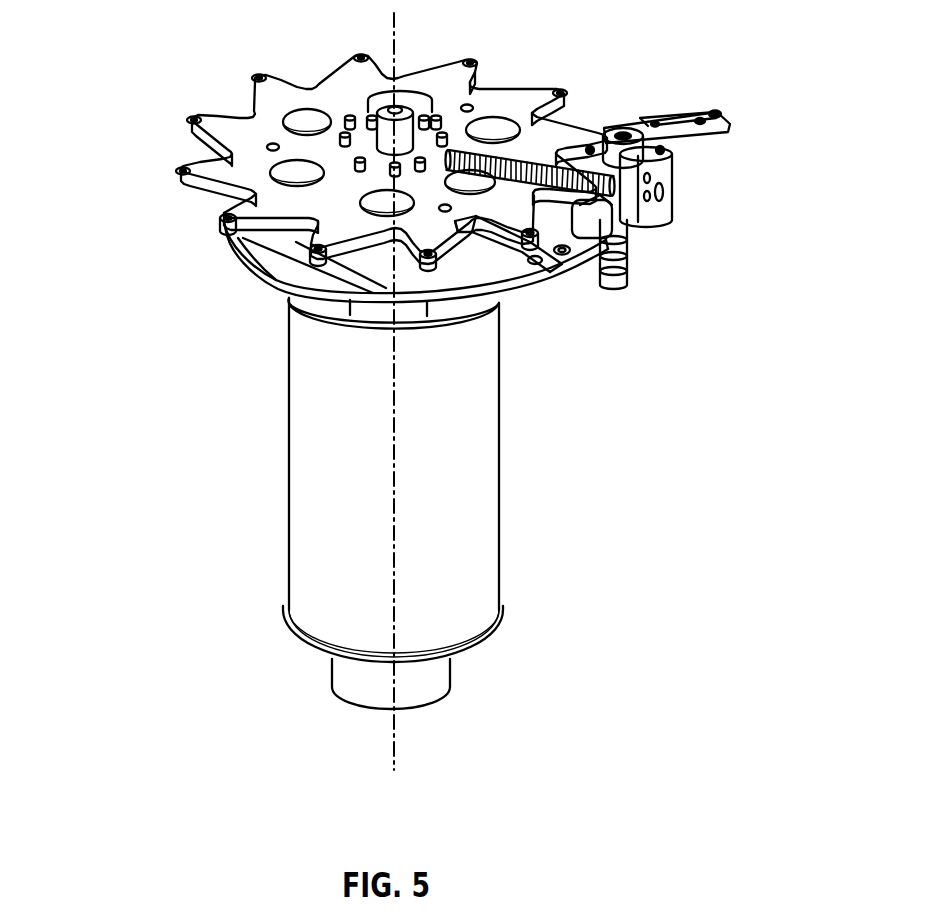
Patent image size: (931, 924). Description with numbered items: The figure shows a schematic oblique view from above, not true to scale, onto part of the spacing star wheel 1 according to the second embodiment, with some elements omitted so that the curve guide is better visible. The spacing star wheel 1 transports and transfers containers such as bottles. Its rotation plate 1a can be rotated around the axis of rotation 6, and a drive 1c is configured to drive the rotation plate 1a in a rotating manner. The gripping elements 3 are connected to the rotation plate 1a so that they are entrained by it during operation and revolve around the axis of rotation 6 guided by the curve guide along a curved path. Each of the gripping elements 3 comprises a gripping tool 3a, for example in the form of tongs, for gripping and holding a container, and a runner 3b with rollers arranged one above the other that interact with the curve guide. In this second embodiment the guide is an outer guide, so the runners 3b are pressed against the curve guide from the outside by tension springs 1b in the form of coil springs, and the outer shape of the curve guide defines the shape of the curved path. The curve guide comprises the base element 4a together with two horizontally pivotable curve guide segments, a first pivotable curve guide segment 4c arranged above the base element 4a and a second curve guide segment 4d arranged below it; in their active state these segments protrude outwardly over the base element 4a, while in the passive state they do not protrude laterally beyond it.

The spacing star wheel 1 is at (121, 103).
The rotation plate 1a is at (518, 97).
The tension springs 1b is at (538, 152).
The drive 1c is at (432, 680).
The gripping elements 3 is at (692, 193).
The gripping tools 3a is at (726, 122).
The runners 3b is at (673, 218).
The base element 4a is at (570, 280).
The first pivotable curve guide segment 4c is at (517, 268).
The second curve guide segment 4d is at (266, 279).
The axis of rotation 6 is at (396, 27).